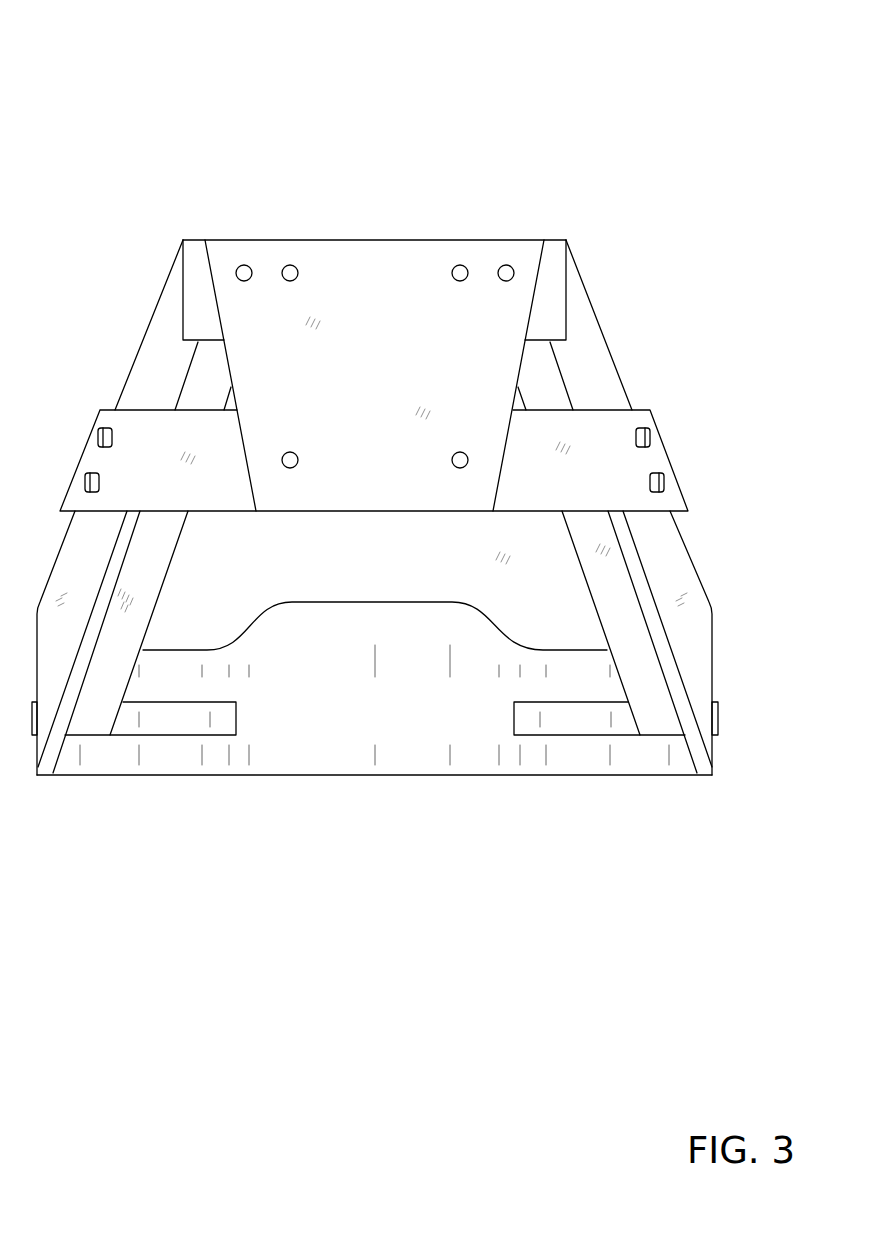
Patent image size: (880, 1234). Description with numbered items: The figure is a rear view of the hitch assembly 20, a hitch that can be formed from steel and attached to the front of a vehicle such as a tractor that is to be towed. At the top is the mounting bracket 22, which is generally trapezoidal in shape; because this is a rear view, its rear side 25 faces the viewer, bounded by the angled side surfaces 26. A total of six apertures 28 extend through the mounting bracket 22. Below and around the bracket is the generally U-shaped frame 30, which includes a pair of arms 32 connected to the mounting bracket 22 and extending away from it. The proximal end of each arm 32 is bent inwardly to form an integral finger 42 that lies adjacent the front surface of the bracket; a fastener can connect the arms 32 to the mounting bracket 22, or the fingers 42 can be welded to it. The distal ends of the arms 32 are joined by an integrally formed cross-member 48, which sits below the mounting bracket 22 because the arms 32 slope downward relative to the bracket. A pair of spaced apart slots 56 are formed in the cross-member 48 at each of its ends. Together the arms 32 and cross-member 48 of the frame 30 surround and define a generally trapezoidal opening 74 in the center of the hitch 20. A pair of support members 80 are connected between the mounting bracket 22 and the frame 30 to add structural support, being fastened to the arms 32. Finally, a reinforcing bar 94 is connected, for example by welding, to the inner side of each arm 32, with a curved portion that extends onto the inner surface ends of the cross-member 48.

The hitch assembly 20 is at (112, 104).
The mounting bracket 22 is at (387, 343).
The rear side 25 is at (387, 289).
The angled side surfaces 26 is at (230, 375).
The apertures 28 is at (290, 265).
The frame 30 is at (718, 572).
The arms 32 is at (617, 357).
The finger 42 is at (545, 293).
The cross-member 48 is at (390, 776).
The slots 56 is at (165, 736).
The opening 74 is at (390, 572).
The support members 80 is at (83, 447).
The reinforcing bar 94 is at (170, 565).